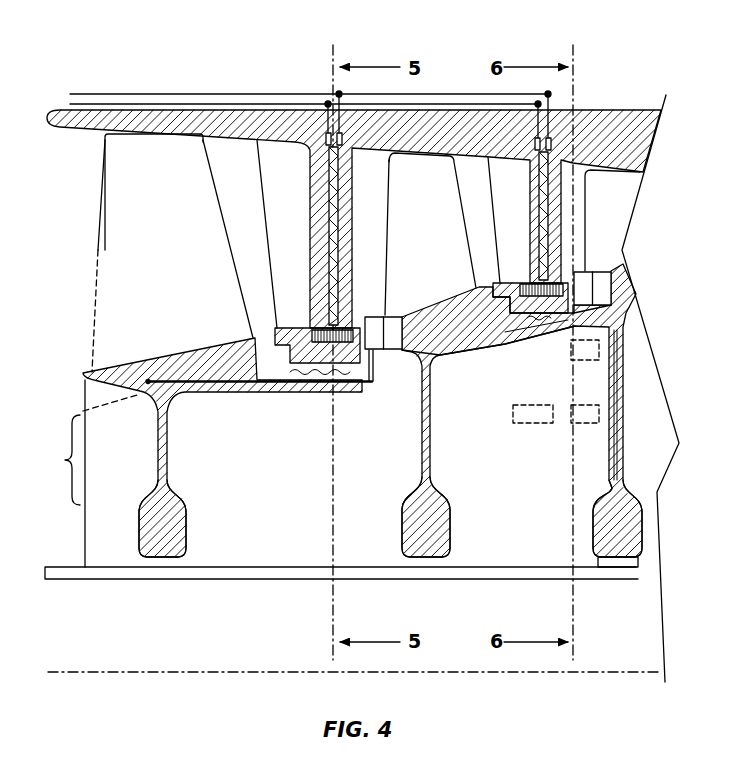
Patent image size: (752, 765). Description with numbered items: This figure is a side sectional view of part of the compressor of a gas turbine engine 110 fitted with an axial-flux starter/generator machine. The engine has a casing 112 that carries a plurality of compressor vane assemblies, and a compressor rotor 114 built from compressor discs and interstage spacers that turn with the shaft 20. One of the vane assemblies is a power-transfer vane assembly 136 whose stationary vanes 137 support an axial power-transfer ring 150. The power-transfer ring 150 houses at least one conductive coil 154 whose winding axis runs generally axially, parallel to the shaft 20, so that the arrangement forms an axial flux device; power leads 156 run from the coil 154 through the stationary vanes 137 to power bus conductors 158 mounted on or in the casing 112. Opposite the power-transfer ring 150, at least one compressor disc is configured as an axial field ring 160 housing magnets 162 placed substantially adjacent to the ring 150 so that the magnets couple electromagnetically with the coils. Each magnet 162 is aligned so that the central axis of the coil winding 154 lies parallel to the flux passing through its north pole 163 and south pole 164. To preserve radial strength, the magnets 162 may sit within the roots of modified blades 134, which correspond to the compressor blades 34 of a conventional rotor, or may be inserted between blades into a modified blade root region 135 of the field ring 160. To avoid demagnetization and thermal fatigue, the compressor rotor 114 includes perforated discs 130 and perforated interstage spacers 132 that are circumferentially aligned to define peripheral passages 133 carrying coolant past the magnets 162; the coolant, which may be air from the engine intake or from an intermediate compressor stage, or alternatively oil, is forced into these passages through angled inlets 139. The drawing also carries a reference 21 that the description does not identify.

The gas turbine engine 110 is at (641, 45).
The casing 112 is at (584, 104).
The compressor rotor 114 is at (660, 352).
The power bus conductors 158 is at (108, 84).
The power leads 156 is at (330, 191).
The power-transfer vane assembly 136 is at (258, 158).
The stationary vanes 137 is at (303, 218).
The modified blades 134 is at (441, 241).
The compressor blades 34 is at (181, 263).
The axial field ring 160 is at (368, 306).
The conductive coil 154 is at (312, 335).
The axial power-transfer ring 150 is at (290, 358).
The north pole 163 is at (373, 314).
The magnets 162 is at (616, 279).
The south pole 164 is at (402, 336).
The modified blade root region 135 is at (363, 352).
The perforated interstage spacers 132 is at (322, 386).
The peripheral passages 133 is at (208, 384).
The angled inlets 139 is at (83, 408).
The perforated discs 130 is at (181, 542).
The shaft 20 is at (633, 580).
The engine centerline 21 is at (162, 673).